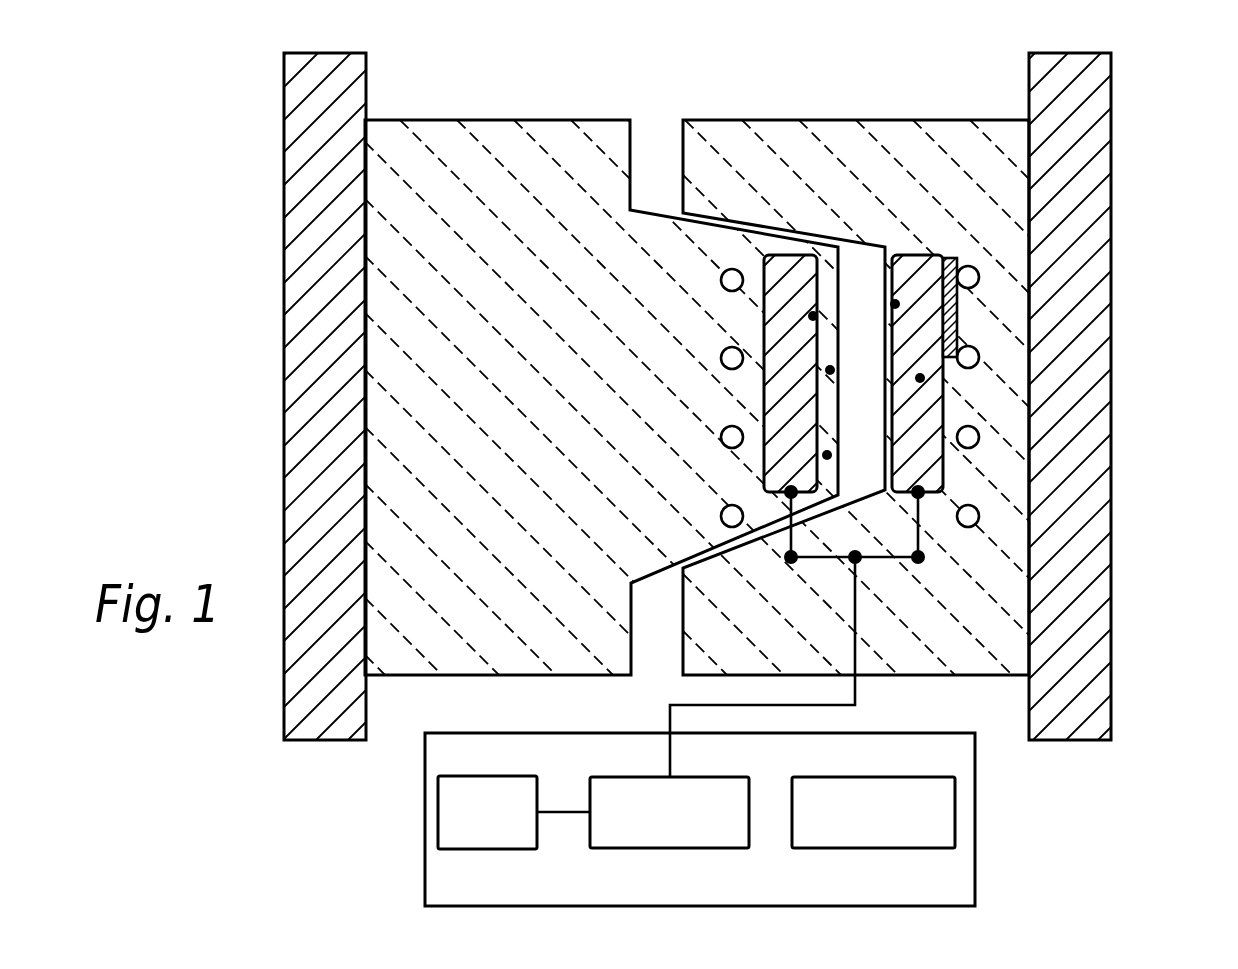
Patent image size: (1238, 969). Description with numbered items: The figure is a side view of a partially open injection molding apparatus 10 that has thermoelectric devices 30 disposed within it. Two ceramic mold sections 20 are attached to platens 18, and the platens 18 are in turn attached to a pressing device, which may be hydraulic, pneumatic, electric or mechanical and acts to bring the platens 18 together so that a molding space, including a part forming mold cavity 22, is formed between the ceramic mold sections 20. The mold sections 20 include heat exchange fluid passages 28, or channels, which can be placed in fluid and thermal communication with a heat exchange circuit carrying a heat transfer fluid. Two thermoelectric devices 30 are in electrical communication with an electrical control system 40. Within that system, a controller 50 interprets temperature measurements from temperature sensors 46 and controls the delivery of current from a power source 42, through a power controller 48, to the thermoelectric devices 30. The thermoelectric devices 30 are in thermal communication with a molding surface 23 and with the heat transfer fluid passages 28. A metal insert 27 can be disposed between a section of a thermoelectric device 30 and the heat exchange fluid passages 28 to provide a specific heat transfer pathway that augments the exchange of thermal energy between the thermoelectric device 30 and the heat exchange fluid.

The injection molding apparatus 10 is at (204, 313).
The platens 18 is at (307, 233).
The ceramic mold sections 20 is at (700, 327).
The part forming mold cavity 22 is at (858, 360).
The molding surface 23 is at (884, 276).
The metal insert 27 is at (958, 318).
The heat exchange fluid passages 28 is at (974, 268).
The thermoelectric devices 30 is at (788, 266).
The electrical control system 40 is at (478, 733).
The power source 42 is at (497, 776).
The temperature sensors 46 is at (920, 378).
The power controller 48 is at (728, 777).
The controller 50 is at (901, 777).